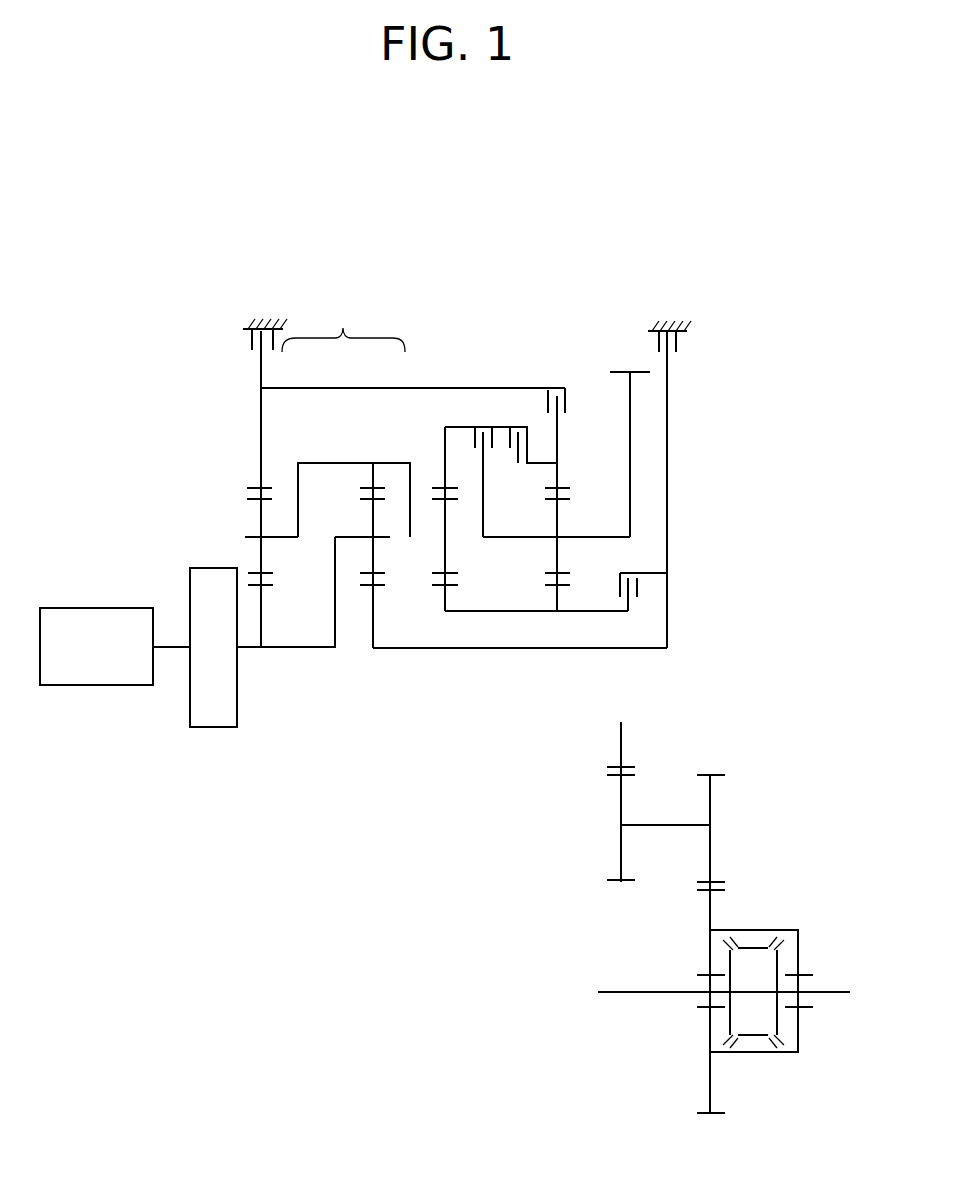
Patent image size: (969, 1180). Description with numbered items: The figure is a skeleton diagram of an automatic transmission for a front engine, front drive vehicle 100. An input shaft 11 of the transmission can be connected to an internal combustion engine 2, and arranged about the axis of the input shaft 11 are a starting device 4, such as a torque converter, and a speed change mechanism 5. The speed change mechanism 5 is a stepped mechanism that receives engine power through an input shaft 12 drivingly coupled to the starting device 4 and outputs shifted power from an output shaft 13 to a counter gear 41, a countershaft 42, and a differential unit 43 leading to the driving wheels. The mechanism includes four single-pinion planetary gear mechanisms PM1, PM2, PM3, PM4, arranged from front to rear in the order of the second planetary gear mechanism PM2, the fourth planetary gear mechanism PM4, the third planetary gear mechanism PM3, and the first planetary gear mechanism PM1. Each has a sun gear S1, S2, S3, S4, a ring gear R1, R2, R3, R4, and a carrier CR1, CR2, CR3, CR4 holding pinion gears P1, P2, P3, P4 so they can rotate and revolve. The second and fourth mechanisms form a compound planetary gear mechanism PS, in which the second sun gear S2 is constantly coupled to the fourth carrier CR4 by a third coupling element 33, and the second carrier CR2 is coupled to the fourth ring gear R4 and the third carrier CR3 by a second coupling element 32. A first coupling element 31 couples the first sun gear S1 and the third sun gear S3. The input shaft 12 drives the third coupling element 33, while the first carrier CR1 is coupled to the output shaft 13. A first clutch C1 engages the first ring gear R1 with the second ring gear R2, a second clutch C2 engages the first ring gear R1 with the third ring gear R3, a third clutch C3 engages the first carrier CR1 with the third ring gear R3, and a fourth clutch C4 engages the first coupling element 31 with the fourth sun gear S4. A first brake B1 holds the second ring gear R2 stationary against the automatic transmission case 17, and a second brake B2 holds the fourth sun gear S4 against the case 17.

The front engine, front drive vehicle 100 is at (458, 210).
The input shaft 11 is at (180, 288).
The internal combustion engine 2 is at (100, 608).
The starting device 4 is at (210, 568).
The input shaft 12 is at (248, 652).
The third coupling element 33 is at (318, 652).
The automatic transmission case 17 is at (250, 322).
The second coupling element 32 is at (382, 462).
The first coupling element 31 is at (510, 612).
The output shaft 13 is at (628, 388).
The counter gear 41 is at (630, 370).
The speed change mechanism 5 is at (695, 615).
The countershaft 42 is at (650, 825).
The differential unit 43 is at (800, 918).
The first brake B1 is at (268, 307).
The second brake B2 is at (676, 307).
The compound planetary gear mechanism PS is at (343, 323).
The first planetary gear mechanism PM1 is at (566, 478).
The second planetary gear mechanism PM2 is at (270, 450).
The third planetary gear mechanism PM3 is at (427, 485).
The fourth planetary gear mechanism PM4 is at (395, 450).
The first ring gear R1 is at (545, 490).
The second ring gear R2 is at (270, 486).
The third ring gear R3 is at (446, 445).
The fourth ring gear R4 is at (360, 490).
The first pinion gears P1 is at (547, 502).
The second pinion gears P2 is at (248, 500).
The third pinion gears P3 is at (462, 500).
The fourth pinion gears P4 is at (360, 501).
The first sun gear S1 is at (545, 585).
The second sun gear S2 is at (272, 585).
The third sun gear S3 is at (458, 588).
The fourth sun gear S4 is at (368, 587).
The first carrier CR1 is at (560, 540).
The second carrier CR2 is at (263, 539).
The third carrier CR3 is at (448, 539).
The fourth carrier CR4 is at (375, 539).
The first clutch C1 is at (557, 387).
The second clutch C2 is at (520, 430).
The third clutch C3 is at (485, 467).
The fourth clutch C4 is at (642, 582).